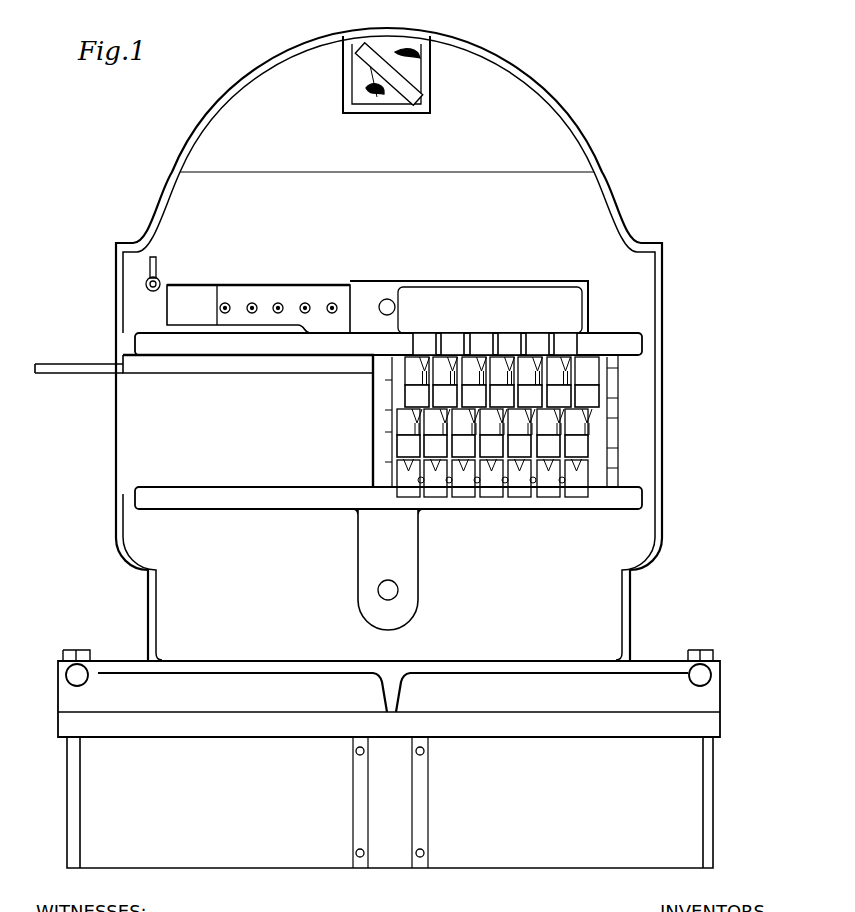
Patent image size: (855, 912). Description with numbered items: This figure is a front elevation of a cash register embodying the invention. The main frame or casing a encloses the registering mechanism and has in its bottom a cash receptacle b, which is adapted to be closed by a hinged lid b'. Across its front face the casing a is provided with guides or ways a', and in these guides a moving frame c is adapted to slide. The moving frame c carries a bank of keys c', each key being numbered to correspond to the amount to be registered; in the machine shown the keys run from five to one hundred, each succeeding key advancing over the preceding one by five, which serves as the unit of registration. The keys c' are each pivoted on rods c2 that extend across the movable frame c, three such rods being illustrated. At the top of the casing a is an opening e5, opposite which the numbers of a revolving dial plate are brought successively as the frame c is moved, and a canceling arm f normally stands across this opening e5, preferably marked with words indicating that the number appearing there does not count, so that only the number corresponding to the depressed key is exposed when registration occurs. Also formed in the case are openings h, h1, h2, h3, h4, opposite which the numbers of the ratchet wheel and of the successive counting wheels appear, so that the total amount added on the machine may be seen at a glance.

The main frame or casing a is at (413, 344).
The guides or ways a' is at (388, 421).
The cash receptacle b is at (390, 802).
The hinged lid b' is at (389, 693).
The moving frame c is at (229, 492).
The keys c' is at (498, 415).
The rods c2 is at (607, 371).
The opening e5 is at (410, 55).
The canceling arm f is at (408, 96).
The opening h is at (334, 302).
The opening h1 is at (307, 302).
The opening h2 is at (281, 302).
The opening h3 is at (255, 302).
The opening h4 is at (228, 302).